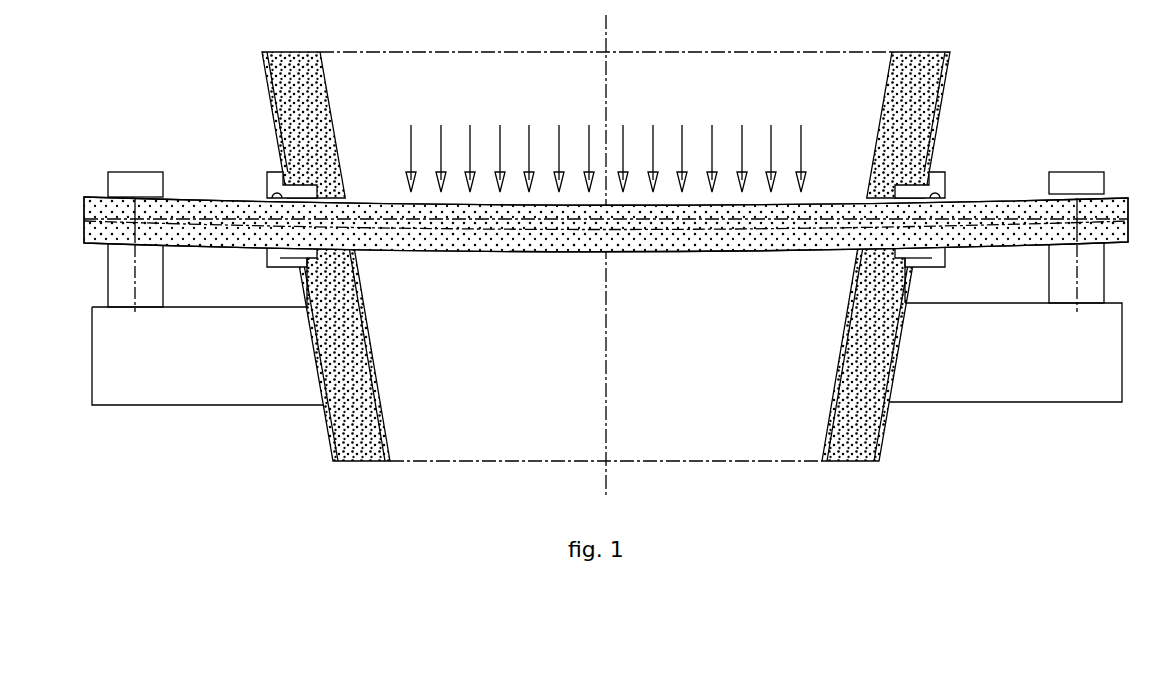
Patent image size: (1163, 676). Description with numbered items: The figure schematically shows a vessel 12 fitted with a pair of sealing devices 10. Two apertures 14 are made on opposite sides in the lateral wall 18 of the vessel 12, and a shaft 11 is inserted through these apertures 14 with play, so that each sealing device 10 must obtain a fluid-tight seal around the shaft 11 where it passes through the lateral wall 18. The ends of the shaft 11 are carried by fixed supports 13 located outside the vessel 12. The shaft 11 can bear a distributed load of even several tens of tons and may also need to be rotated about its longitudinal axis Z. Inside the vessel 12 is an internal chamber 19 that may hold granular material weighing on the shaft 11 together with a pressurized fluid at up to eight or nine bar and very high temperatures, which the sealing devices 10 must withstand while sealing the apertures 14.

The sealing device 10 is at (235, 157).
The shaft 11 is at (765, 238).
The vessel 12 is at (258, 80).
The fixed support 13 is at (120, 287).
The aperture 14 is at (267, 195).
The lateral wall 18 is at (353, 428).
The internal chamber 19 is at (386, 441).
The longitudinal axis Z is at (1117, 218).